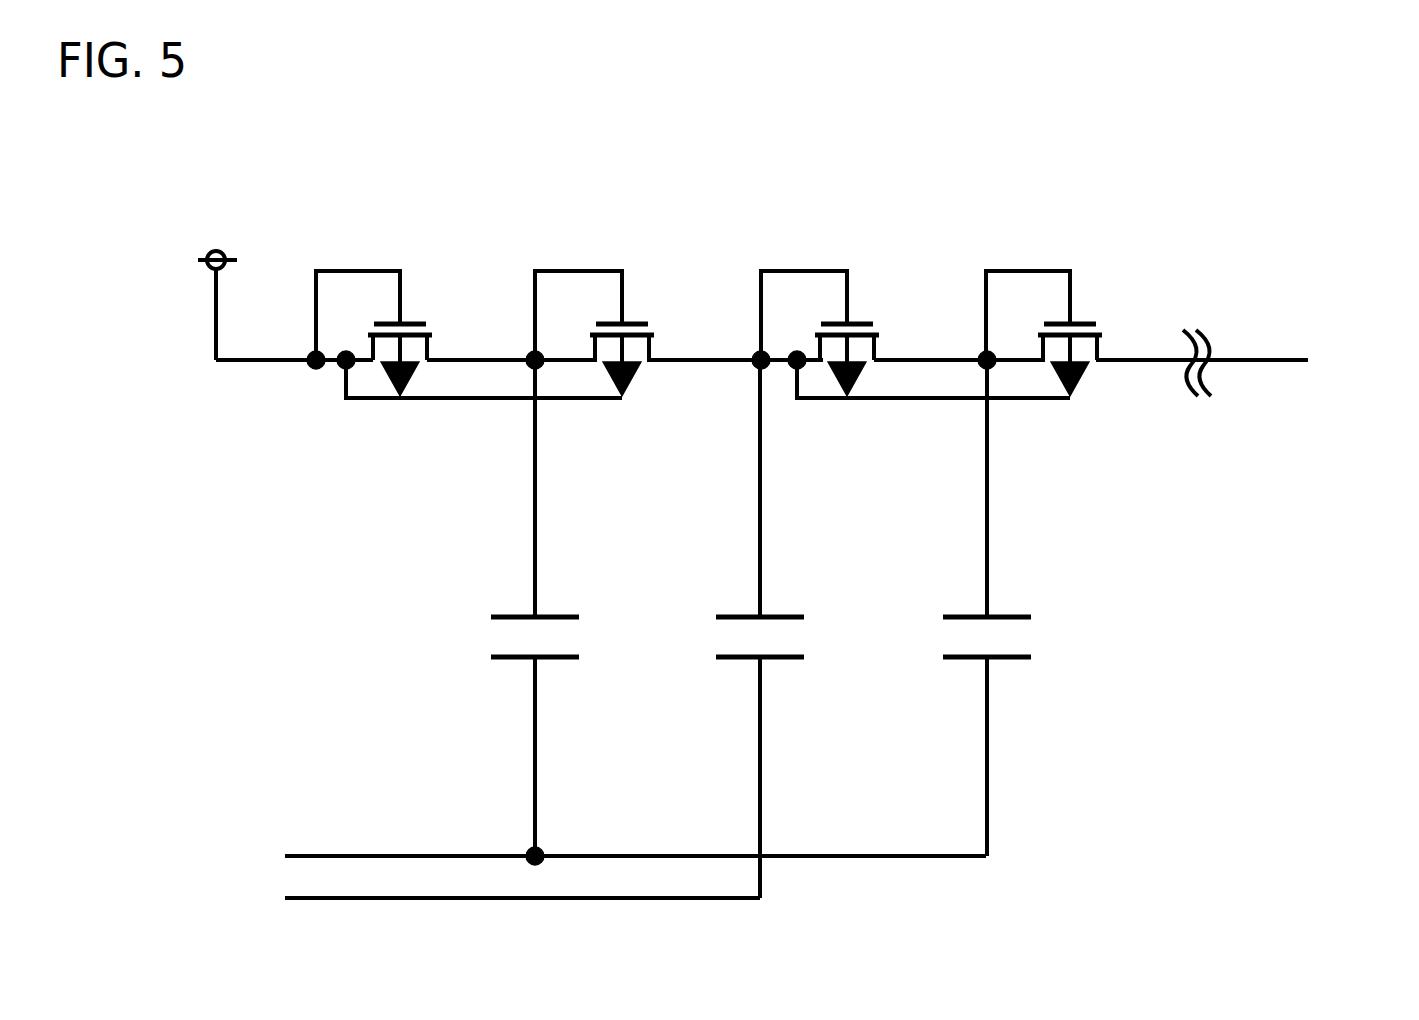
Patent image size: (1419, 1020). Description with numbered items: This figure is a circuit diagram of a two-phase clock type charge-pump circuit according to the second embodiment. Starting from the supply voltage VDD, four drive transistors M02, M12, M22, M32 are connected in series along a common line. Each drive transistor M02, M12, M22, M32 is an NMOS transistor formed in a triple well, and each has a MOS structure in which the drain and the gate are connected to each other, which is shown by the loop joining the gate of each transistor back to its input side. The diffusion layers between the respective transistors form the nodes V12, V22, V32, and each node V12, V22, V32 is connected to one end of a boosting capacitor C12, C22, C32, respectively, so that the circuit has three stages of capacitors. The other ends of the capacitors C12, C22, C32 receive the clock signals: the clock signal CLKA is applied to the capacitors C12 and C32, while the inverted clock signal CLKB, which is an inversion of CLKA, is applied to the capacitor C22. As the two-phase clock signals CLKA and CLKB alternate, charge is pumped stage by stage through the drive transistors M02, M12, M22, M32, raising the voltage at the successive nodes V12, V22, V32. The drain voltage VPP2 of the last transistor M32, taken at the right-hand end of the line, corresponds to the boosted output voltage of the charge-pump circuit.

The supply voltage VDD is at (222, 277).
The drive transistor M02 is at (375, 306).
The drive transistor M12 is at (597, 306).
The drive transistor M22 is at (824, 306).
The drive transistor M32 is at (1044, 306).
The node V12 is at (501, 336).
The node V22 is at (728, 336).
The node V32 is at (951, 336).
The capacitor C12 is at (492, 608).
The capacitor C22 is at (721, 629).
The capacitor C32 is at (946, 608).
The drain voltage VPP2 is at (1296, 363).
The clock signal CLKA is at (579, 849).
The inverted clock signal CLKB is at (466, 902).